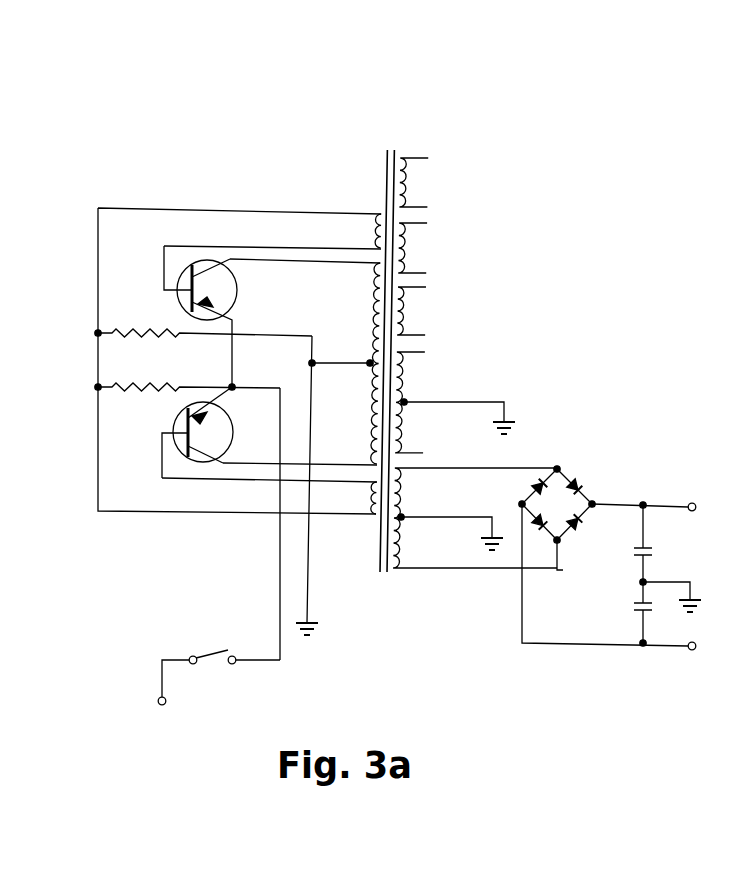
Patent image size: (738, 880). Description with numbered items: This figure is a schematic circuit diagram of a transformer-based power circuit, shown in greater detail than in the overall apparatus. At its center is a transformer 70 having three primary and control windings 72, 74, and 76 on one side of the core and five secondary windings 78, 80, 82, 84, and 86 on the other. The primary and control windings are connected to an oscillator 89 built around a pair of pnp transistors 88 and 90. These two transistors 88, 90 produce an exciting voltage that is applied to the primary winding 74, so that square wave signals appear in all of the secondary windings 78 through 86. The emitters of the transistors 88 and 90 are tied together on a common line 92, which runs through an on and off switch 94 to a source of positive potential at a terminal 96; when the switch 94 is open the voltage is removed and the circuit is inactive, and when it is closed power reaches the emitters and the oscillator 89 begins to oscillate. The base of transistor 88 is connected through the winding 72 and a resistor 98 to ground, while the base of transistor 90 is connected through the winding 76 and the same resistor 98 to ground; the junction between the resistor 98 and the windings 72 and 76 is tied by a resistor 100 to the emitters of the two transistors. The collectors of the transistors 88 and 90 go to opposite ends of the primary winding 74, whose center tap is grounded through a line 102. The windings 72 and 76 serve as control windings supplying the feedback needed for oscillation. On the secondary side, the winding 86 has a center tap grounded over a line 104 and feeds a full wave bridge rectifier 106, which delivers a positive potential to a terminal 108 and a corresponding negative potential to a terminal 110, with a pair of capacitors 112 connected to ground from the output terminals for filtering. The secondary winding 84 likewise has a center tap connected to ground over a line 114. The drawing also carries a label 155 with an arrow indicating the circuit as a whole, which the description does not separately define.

The transformer 70 is at (393, 150).
The control winding 72 is at (372, 232).
The primary winding 74 is at (372, 310).
The control winding 76 is at (370, 498).
The secondary winding 78 is at (412, 185).
The secondary winding 80 is at (411, 243).
The secondary winding 82 is at (408, 310).
The secondary winding 84 is at (408, 375).
The secondary winding 86 is at (408, 500).
The pnp transistor 88 is at (237, 296).
The oscillator 89 is at (275, 374).
The pnp transistor 90 is at (233, 428).
The line 92 is at (280, 558).
The on and off switch 94 is at (208, 658).
The terminal 96 is at (158, 701).
The resistor 98 is at (157, 339).
The resistor 100 is at (170, 392).
The line 102 is at (346, 365).
The line 104 is at (492, 517).
The full wave bridge rectifier 106 is at (568, 477).
The terminal 108 is at (693, 502).
The terminal 110 is at (690, 651).
The capacitors 112 is at (632, 606).
The line 114 is at (496, 400).
The power supply 155 is at (733, 294).